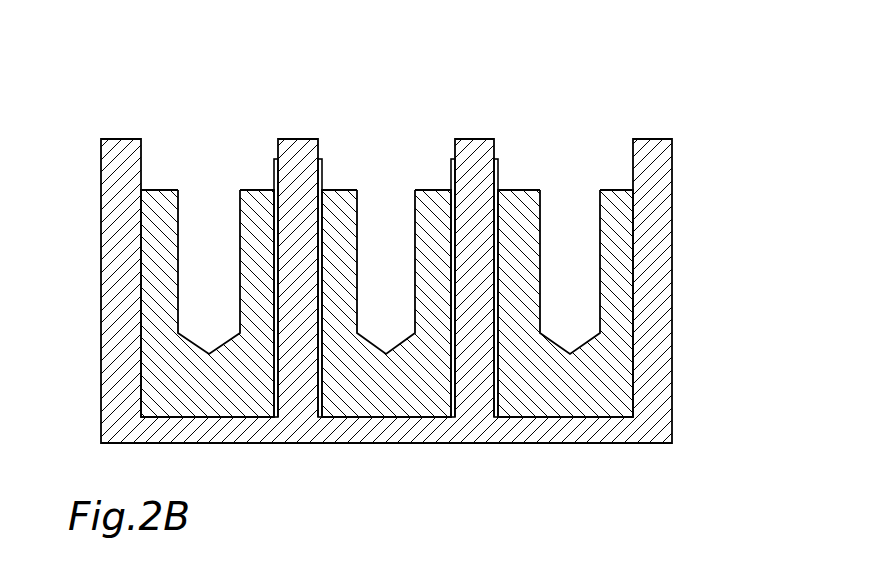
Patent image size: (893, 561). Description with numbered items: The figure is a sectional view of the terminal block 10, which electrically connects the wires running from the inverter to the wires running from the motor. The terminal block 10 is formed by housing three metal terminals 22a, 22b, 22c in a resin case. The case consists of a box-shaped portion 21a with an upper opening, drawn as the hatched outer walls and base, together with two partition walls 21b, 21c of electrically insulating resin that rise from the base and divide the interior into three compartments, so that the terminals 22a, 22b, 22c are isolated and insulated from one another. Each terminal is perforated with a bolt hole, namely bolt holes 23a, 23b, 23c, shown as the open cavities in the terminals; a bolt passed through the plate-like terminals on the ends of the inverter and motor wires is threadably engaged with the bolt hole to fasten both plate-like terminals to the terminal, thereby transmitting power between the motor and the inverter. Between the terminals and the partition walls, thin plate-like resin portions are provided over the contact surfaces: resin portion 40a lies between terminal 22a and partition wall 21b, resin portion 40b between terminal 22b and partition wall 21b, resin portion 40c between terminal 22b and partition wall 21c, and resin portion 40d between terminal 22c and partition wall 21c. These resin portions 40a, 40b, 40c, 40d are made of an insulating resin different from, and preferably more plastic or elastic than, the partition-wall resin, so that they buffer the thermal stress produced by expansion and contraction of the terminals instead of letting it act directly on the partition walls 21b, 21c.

The terminal block 10 is at (640, 110).
The box-shaped portion 21a is at (673, 262).
The partition wall 21b is at (301, 139).
The partition wall 21c is at (479, 139).
The terminal 22a is at (165, 188).
The terminal 22b is at (343, 188).
The terminal 22c is at (521, 188).
The bolt hole 23a is at (218, 188).
The bolt hole 23b is at (396, 188).
The bolt hole 23c is at (576, 188).
The resin portion 40a is at (273, 370).
The resin portion 40b is at (323, 370).
The resin portion 40c is at (450, 370).
The resin portion 40d is at (499, 370).